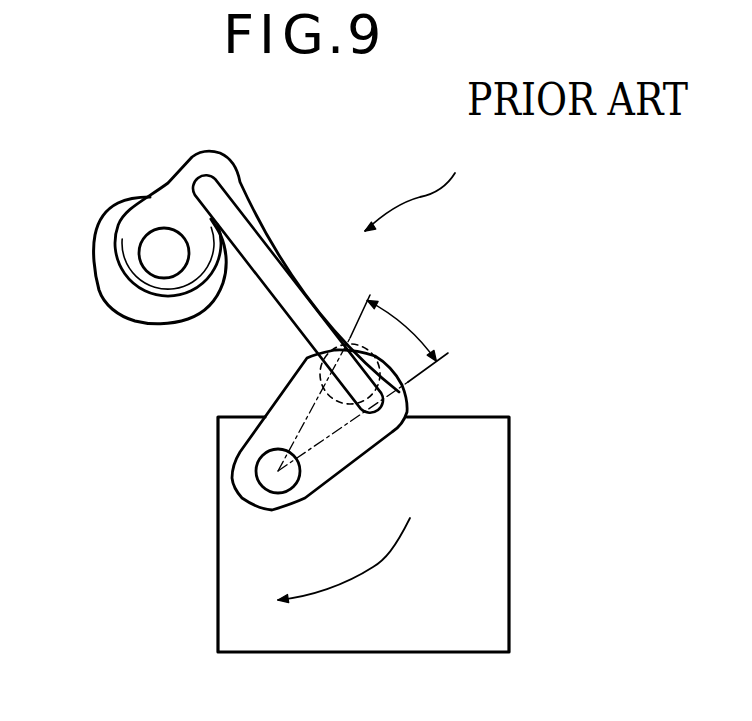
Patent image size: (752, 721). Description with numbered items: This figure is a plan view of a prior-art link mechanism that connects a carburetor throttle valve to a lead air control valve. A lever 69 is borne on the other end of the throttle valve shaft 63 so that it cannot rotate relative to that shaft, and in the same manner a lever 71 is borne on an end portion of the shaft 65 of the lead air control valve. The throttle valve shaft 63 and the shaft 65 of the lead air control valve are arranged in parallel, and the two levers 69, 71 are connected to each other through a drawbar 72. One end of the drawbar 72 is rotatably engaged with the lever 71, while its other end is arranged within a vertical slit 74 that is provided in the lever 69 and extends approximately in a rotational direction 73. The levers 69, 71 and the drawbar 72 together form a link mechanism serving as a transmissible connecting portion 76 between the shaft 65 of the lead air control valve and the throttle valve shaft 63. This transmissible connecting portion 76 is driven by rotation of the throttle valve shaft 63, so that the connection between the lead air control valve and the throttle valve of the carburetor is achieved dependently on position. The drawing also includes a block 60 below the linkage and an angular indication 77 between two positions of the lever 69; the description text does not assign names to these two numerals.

The slide block 60 is at (483, 568).
The throttle valve shaft 63 is at (258, 460).
The shaft of the lead air control valve 65 is at (160, 265).
The lever 69 is at (392, 443).
The lever 71 is at (172, 196).
The drawbar 72 is at (262, 240).
The rotational direction 73 is at (373, 567).
The vertical slit 74 is at (305, 358).
The transmissible connecting portion 76 is at (422, 187).
The swing angle 77 is at (405, 320).